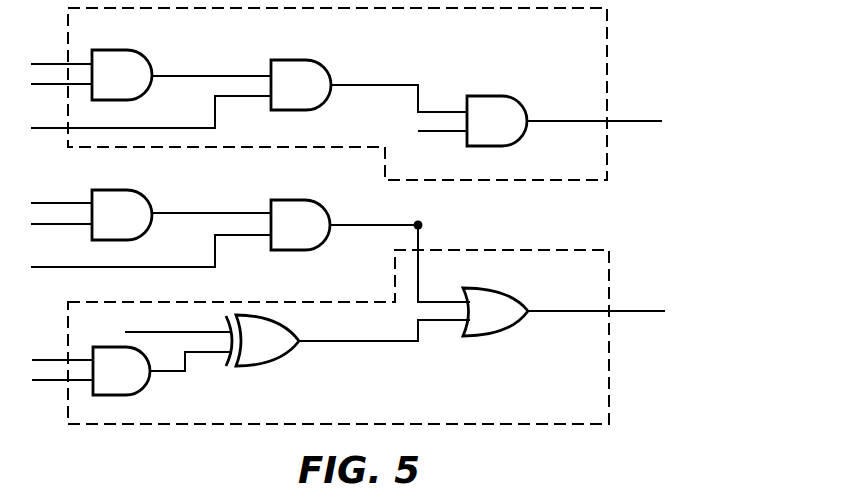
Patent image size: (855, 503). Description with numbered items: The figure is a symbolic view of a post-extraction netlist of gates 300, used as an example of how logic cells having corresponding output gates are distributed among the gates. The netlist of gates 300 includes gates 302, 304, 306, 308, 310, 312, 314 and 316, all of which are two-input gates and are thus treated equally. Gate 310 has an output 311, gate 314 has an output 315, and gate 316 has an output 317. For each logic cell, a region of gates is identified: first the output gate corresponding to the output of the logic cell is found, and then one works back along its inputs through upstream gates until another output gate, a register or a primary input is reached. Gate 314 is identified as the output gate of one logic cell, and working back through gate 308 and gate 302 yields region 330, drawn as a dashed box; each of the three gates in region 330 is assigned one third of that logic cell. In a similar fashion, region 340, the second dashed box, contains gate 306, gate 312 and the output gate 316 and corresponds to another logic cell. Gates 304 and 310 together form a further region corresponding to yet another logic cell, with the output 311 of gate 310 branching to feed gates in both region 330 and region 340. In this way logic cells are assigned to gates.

The netlist of gates 300 is at (662, 60).
The gate 302 is at (100, 48).
The gate 304 is at (148, 200).
The gate 306 is at (147, 387).
The gate 308 is at (288, 58).
The gate 310 is at (288, 198).
The output 311 is at (331, 228).
The gate 312 is at (262, 368).
The gate 314 is at (500, 96).
The output 315 is at (528, 124).
The gate 316 is at (495, 337).
The output 317 is at (530, 308).
The region 330 is at (609, 152).
The region 340 is at (611, 392).